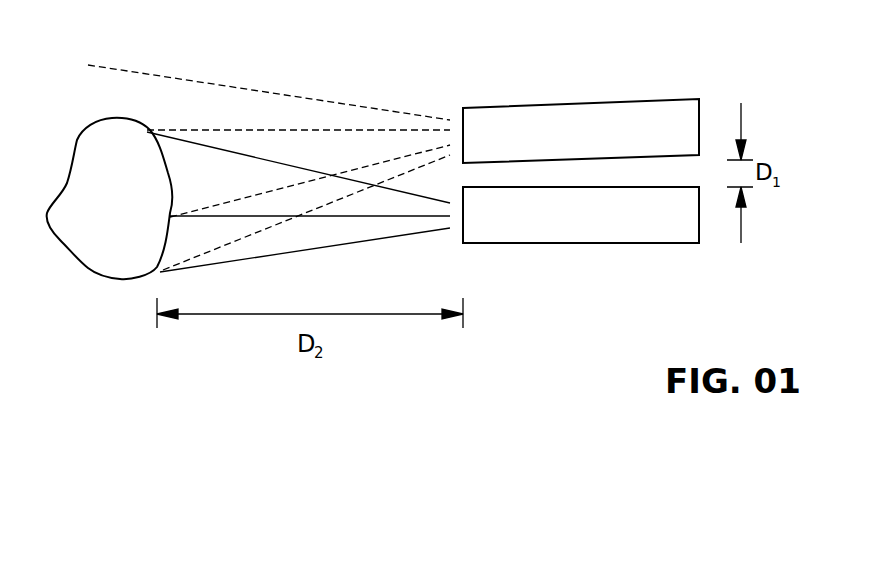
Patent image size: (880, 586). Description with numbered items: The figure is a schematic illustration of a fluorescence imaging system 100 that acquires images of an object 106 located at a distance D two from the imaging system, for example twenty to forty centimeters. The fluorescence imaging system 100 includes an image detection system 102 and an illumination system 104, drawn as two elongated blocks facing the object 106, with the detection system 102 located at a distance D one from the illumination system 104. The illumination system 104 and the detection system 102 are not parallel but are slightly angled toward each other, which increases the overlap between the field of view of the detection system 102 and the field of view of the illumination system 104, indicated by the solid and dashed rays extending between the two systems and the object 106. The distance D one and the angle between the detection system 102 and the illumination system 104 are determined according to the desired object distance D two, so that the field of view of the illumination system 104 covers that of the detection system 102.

The fluorescence imaging system 100 is at (357, 70).
The image detection system 102 is at (615, 243).
The illumination system 104 is at (643, 105).
The object 106 is at (58, 260).